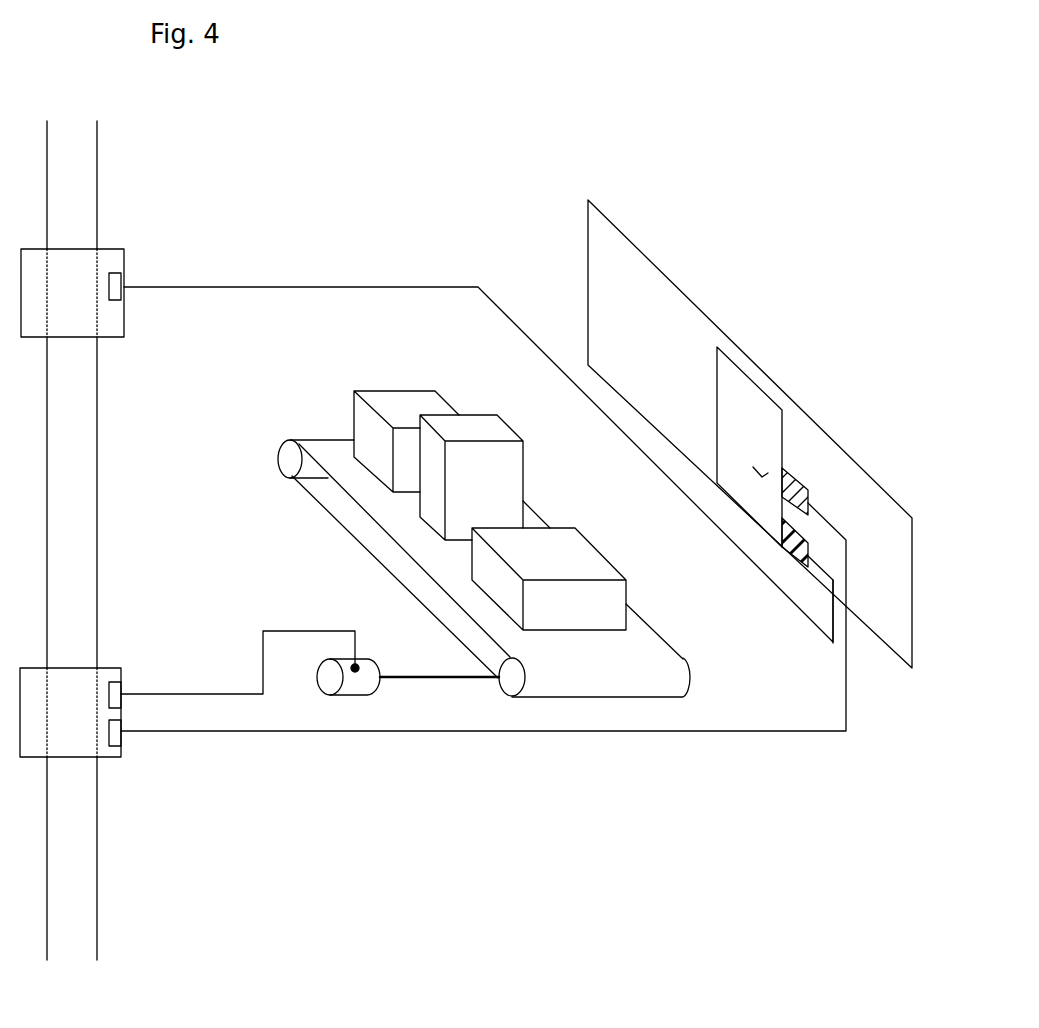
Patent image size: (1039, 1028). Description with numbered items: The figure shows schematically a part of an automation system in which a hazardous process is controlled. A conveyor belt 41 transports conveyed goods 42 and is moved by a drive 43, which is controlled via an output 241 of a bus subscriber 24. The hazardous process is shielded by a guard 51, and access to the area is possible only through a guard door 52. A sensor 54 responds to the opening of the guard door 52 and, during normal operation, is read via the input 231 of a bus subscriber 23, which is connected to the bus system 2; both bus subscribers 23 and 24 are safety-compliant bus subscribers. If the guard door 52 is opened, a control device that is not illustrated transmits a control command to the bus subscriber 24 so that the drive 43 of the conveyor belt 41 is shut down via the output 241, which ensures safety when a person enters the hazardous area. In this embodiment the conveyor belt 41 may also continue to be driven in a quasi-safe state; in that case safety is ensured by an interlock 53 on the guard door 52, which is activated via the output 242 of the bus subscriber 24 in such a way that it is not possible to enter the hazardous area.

The bus system 2 is at (97, 820).
The bus subscriber 23 is at (112, 247).
The input 231 is at (120, 300).
The bus subscriber 24 is at (110, 666).
The output 241 is at (110, 682).
The output 242 is at (110, 745).
The conveyor belt 41 is at (368, 490).
The conveyed goods 42 is at (393, 390).
The drive 43 is at (355, 697).
The guard 51 is at (652, 262).
The guard door 52 is at (743, 377).
The interlock 53 is at (795, 477).
The sensor 54 is at (805, 543).